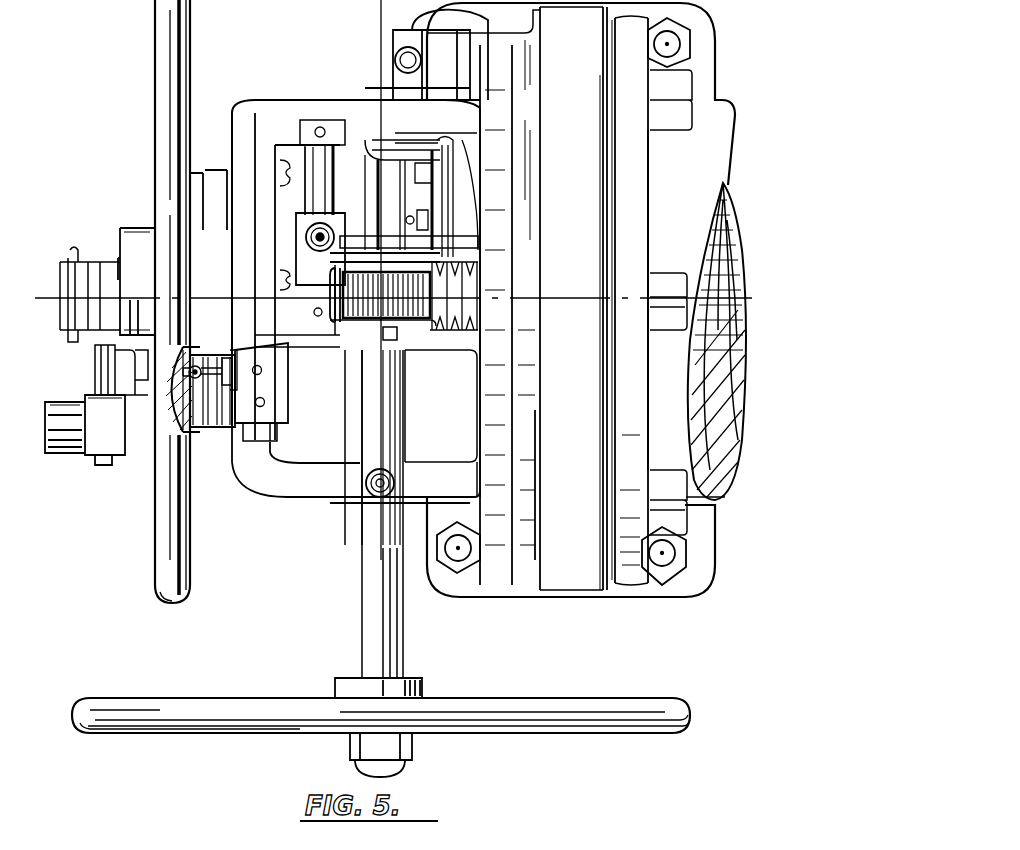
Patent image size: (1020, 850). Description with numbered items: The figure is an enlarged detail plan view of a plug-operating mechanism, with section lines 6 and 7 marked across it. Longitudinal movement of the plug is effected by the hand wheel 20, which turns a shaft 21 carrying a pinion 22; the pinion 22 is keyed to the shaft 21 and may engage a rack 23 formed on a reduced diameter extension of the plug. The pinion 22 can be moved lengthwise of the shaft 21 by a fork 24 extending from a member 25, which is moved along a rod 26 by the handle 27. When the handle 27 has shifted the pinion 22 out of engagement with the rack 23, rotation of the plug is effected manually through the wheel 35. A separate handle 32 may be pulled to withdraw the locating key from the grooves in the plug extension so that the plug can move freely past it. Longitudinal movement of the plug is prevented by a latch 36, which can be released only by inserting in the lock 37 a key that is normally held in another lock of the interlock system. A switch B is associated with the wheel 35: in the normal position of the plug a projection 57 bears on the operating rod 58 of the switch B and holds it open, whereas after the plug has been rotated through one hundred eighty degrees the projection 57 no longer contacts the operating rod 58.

The section line 6- 6 is at (44, 307).
The section line 7- 7 is at (372, 19).
The hand wheel 20 is at (585, 722).
The shaft 21 is at (363, 592).
The pinion 22 is at (452, 311).
The rack 23 is at (470, 275).
The fork 24 is at (408, 263).
The member 25 is at (313, 290).
The rod 26 is at (316, 160).
The handle 27 is at (352, 188).
The handle 32 is at (373, 145).
The wheel 35 is at (157, 47).
The latch 36 is at (97, 356).
The lock 37 is at (84, 456).
The projection 57 is at (192, 430).
The operating rod 58 is at (205, 427).
The switch B is at (280, 408).